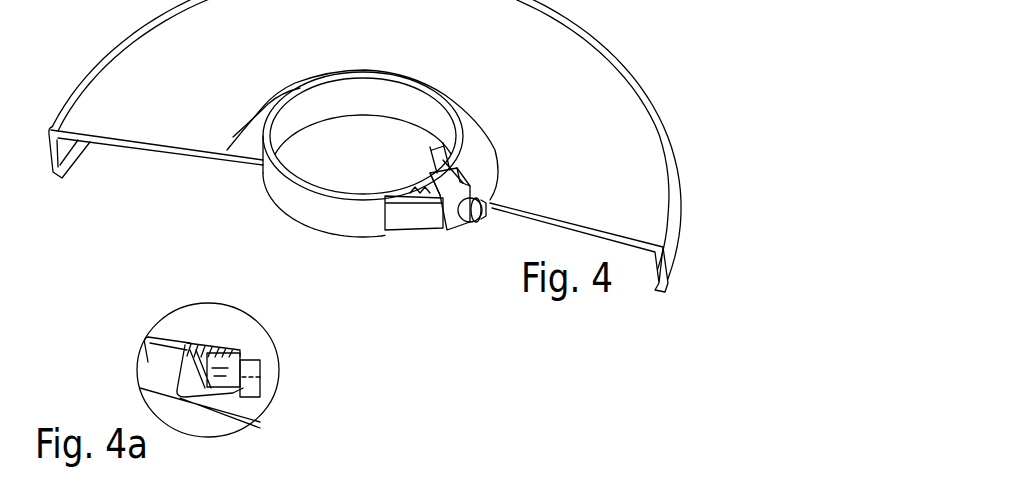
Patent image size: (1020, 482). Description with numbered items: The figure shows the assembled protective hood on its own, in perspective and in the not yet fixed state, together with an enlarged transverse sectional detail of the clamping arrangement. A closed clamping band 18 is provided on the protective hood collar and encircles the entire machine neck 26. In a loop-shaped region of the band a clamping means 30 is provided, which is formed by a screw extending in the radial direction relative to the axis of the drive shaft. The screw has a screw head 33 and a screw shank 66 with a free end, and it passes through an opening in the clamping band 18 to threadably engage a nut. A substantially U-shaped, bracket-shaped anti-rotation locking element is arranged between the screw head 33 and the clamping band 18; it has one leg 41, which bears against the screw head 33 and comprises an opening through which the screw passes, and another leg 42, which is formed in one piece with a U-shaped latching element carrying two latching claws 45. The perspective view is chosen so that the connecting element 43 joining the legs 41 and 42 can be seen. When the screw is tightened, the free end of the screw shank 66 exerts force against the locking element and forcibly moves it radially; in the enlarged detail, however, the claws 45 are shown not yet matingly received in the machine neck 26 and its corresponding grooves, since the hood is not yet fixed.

In FIG. 4, the connecting element 43 is at (463, 183).
In FIG. 4A, the clamping band 18 is at (227, 352).
In FIG. 4A, the machine neck 26 is at (180, 357).
In FIG. 4A, the leg 41 is at (247, 363).
In FIG. 4A, the latching claws 45 is at (197, 348).
In FIG. 4A, the leg 42 is at (188, 366).
In FIG. 4A, the clamping means 30 is at (260, 375).
In FIG. 4A, the screw head 33 is at (243, 390).
In FIG. 4A, the screw shank 66 is at (222, 378).